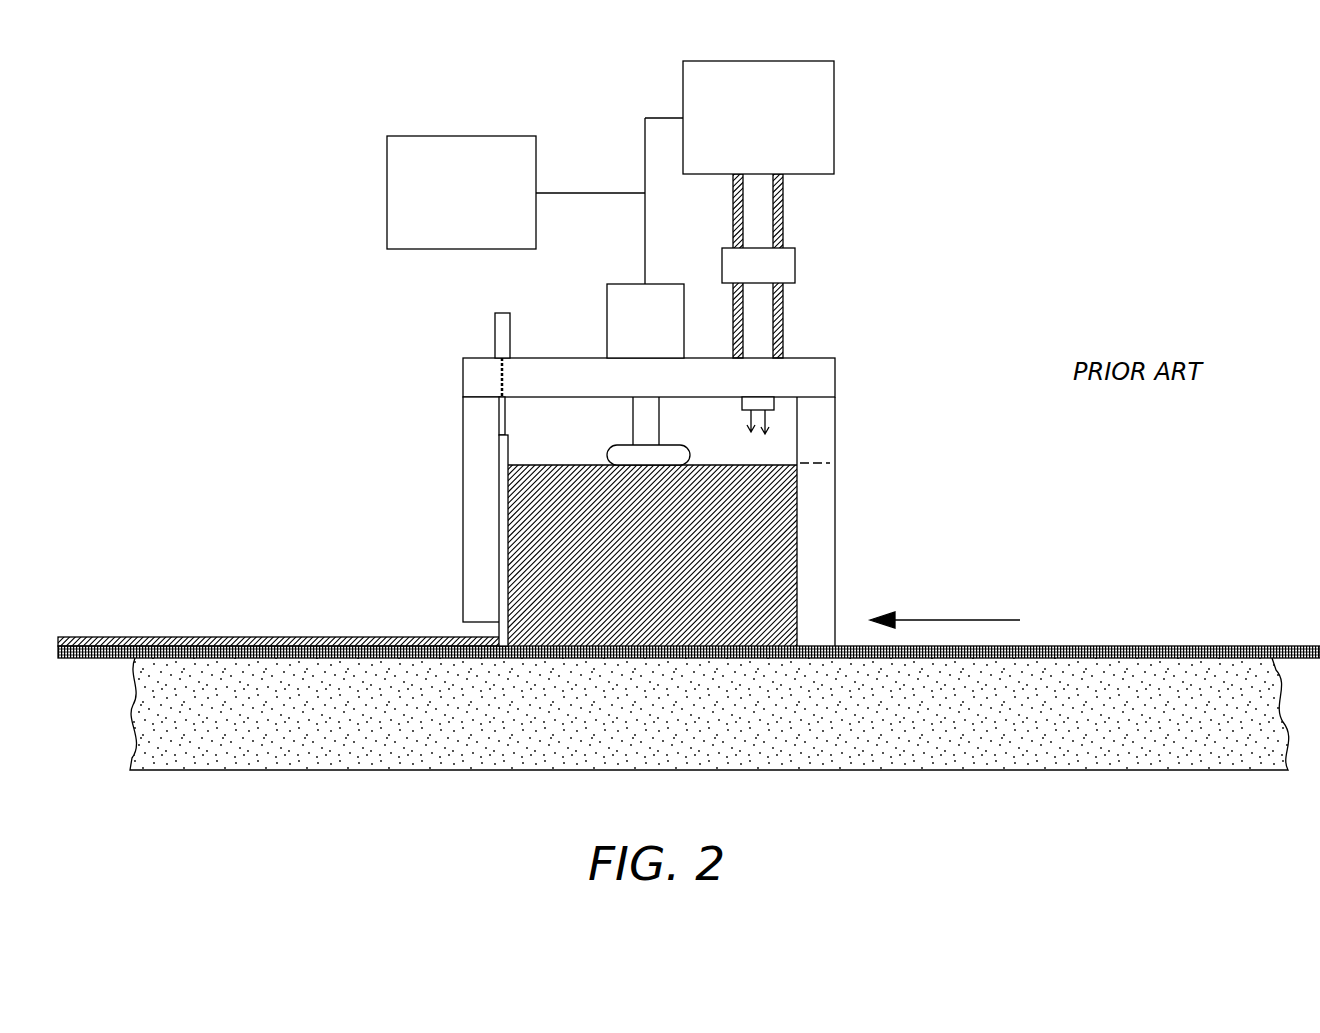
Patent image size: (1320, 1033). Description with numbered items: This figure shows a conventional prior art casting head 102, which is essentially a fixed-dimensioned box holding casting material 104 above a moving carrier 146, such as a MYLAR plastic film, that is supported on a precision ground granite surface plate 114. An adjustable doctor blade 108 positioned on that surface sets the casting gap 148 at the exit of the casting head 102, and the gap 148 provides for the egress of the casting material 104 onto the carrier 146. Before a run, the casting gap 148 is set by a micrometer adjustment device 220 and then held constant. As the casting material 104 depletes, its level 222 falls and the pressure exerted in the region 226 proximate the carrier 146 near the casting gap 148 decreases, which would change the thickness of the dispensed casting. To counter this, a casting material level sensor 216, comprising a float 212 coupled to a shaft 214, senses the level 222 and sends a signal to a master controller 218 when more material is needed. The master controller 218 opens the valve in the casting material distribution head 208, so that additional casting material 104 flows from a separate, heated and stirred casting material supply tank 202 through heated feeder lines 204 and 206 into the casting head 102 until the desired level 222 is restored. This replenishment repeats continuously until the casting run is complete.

The casting head 102 is at (893, 474).
The casting material 104 is at (342, 642).
The adjustable doctor blade 108 is at (505, 525).
The granite surface plate 114 is at (870, 715).
The carrier 146 is at (1150, 645).
The casting gap 148 is at (507, 642).
The casting material supply tank 202 is at (835, 112).
The feeder line 204 is at (733, 191).
The feeder line 206 is at (783, 197).
The casting material distribution head 208 is at (797, 268).
The float 212 is at (610, 449).
The shaft 214 is at (648, 432).
The casting material level sensor 216 is at (607, 321).
The master controller 218 is at (387, 207).
The micrometer adjustment device 220 is at (495, 322).
The level 222 is at (815, 463).
The region 226 is at (545, 637).